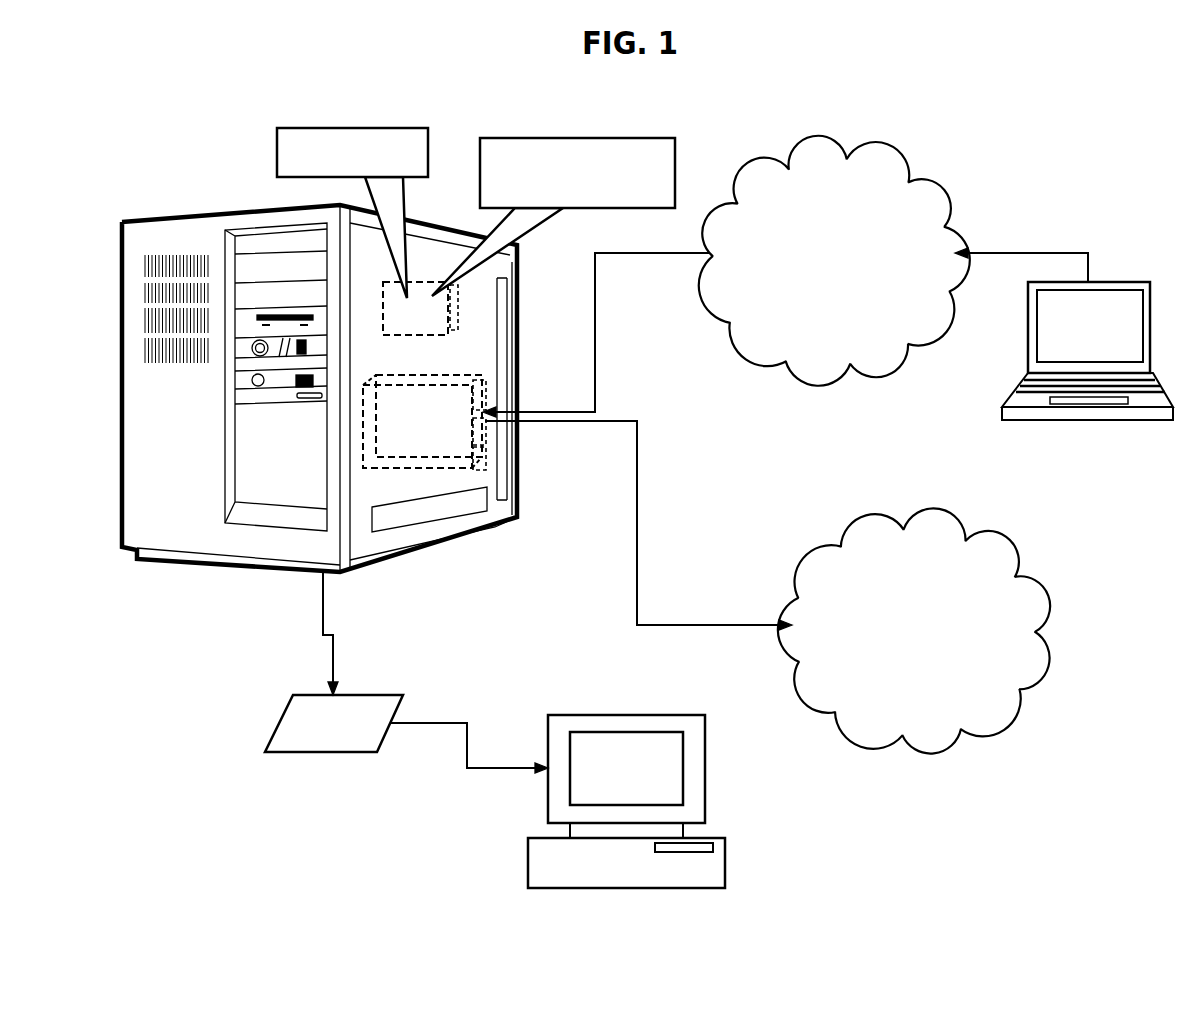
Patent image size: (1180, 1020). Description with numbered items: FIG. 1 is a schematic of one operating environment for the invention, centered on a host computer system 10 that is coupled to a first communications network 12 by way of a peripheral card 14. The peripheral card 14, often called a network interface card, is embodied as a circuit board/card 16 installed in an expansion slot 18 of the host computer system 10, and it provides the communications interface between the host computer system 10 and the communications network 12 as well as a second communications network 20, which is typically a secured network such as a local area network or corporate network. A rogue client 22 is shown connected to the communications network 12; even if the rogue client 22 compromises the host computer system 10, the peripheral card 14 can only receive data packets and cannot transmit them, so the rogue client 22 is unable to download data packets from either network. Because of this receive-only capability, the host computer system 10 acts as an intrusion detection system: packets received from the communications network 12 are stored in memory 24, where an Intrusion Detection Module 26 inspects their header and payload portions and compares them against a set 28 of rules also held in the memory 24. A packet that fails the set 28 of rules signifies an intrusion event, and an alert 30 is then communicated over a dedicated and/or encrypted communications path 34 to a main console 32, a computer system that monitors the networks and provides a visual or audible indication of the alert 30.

The host computer system 10 is at (187, 562).
The communications network 12 is at (883, 148).
The peripheral card 14 is at (490, 388).
The circuit board/card 16 is at (457, 435).
The expansion slot 18 is at (463, 462).
The second communications network 20 is at (990, 697).
The rogue client 22 is at (1123, 282).
The memory 24 is at (440, 320).
The Intrusion Detection Module 26 is at (607, 138).
The set of rules 28 is at (330, 128).
The alert 30 is at (318, 752).
The main console 32 is at (528, 752).
The communications path 34 is at (333, 645).